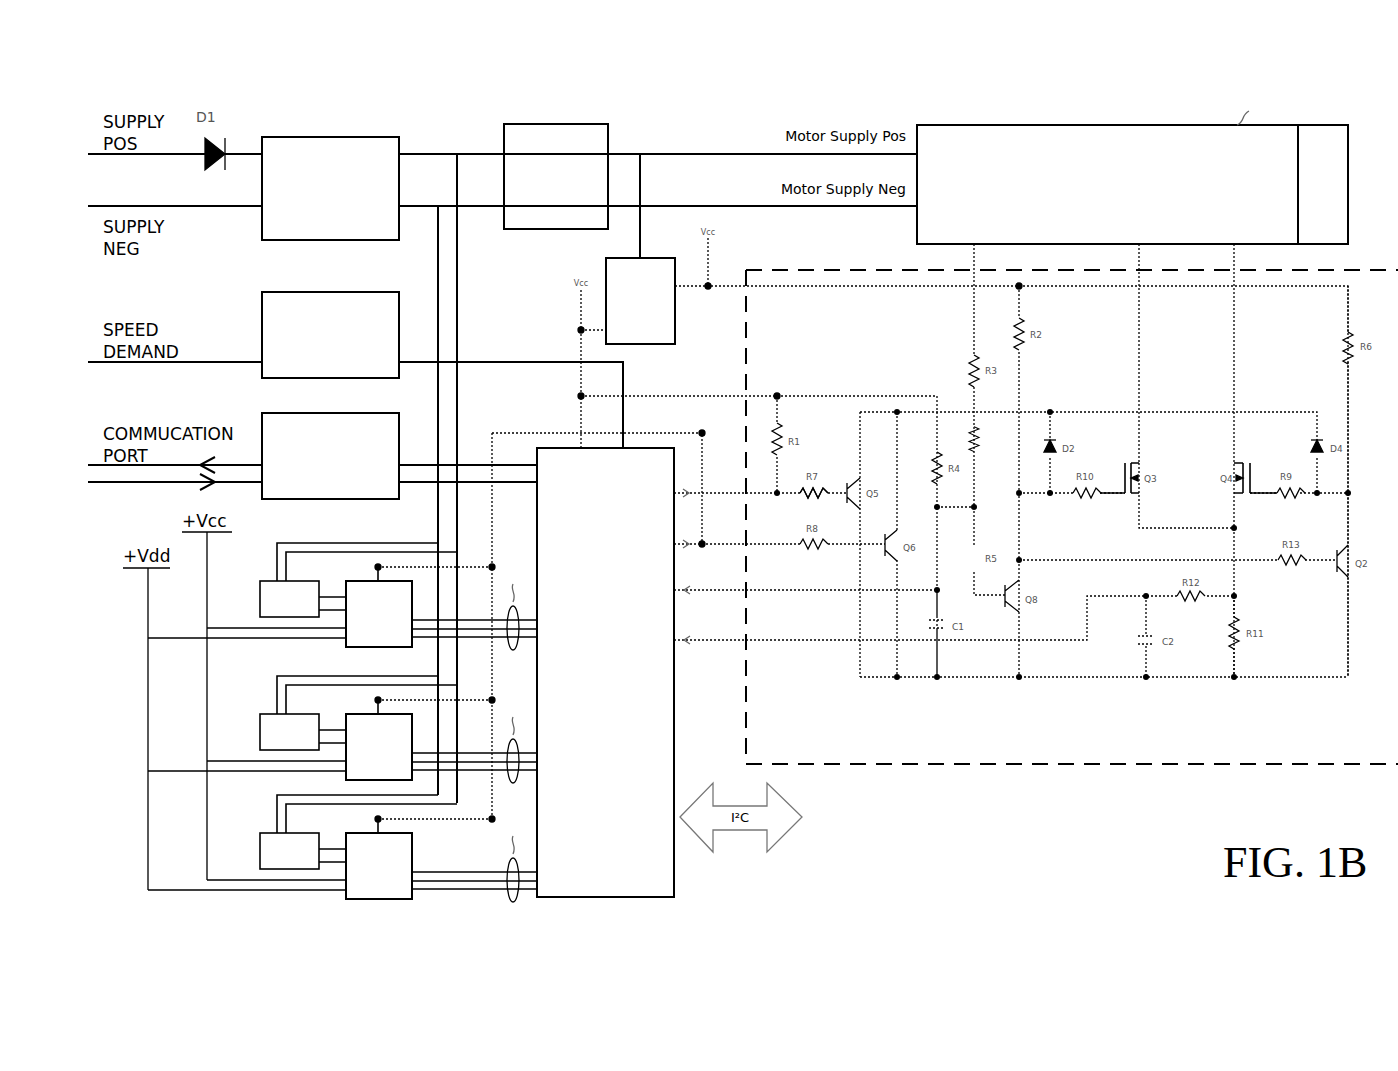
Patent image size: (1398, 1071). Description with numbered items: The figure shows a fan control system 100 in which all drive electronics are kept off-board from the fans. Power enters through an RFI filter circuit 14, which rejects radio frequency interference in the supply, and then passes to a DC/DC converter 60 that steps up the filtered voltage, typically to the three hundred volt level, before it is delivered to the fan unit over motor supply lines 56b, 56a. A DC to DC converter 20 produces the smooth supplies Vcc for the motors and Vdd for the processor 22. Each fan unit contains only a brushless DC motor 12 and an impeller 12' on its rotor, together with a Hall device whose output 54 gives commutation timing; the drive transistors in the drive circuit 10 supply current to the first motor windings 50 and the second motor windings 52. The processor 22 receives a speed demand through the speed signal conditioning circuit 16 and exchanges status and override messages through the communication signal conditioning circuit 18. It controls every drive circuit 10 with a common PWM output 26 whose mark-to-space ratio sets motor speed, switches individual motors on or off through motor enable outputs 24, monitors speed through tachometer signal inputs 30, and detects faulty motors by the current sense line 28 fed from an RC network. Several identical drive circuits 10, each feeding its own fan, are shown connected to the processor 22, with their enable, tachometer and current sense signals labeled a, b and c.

The fan control system 100 is at (1392, 71).
The brushless DC motor 12 is at (1132, 163).
The impeller 12' is at (1315, 184).
The RFI filter circuit 14 is at (385, 137).
The speed signal conditioning circuit 16 is at (391, 292).
The communication signal conditioning circuit 18 is at (391, 413).
The DC to DC converter 20 is at (653, 258).
The processor 22 is at (674, 868).
The motor enable output 24 is at (703, 492).
The common PWM output 26 is at (703, 543).
The current sense line 28 is at (703, 639).
The tachometer signal input 30 is at (703, 589).
The first motor windings 50 is at (1136, 262).
The second motor windings 52 is at (1231, 262).
The Hall device output 54 is at (971, 262).
The motor supply negative line 56a is at (683, 206).
The motor supply positive line 56b is at (708, 154).
The DC/DC converter 60 is at (556, 124).
The drive circuit 10 is at (342, 722).